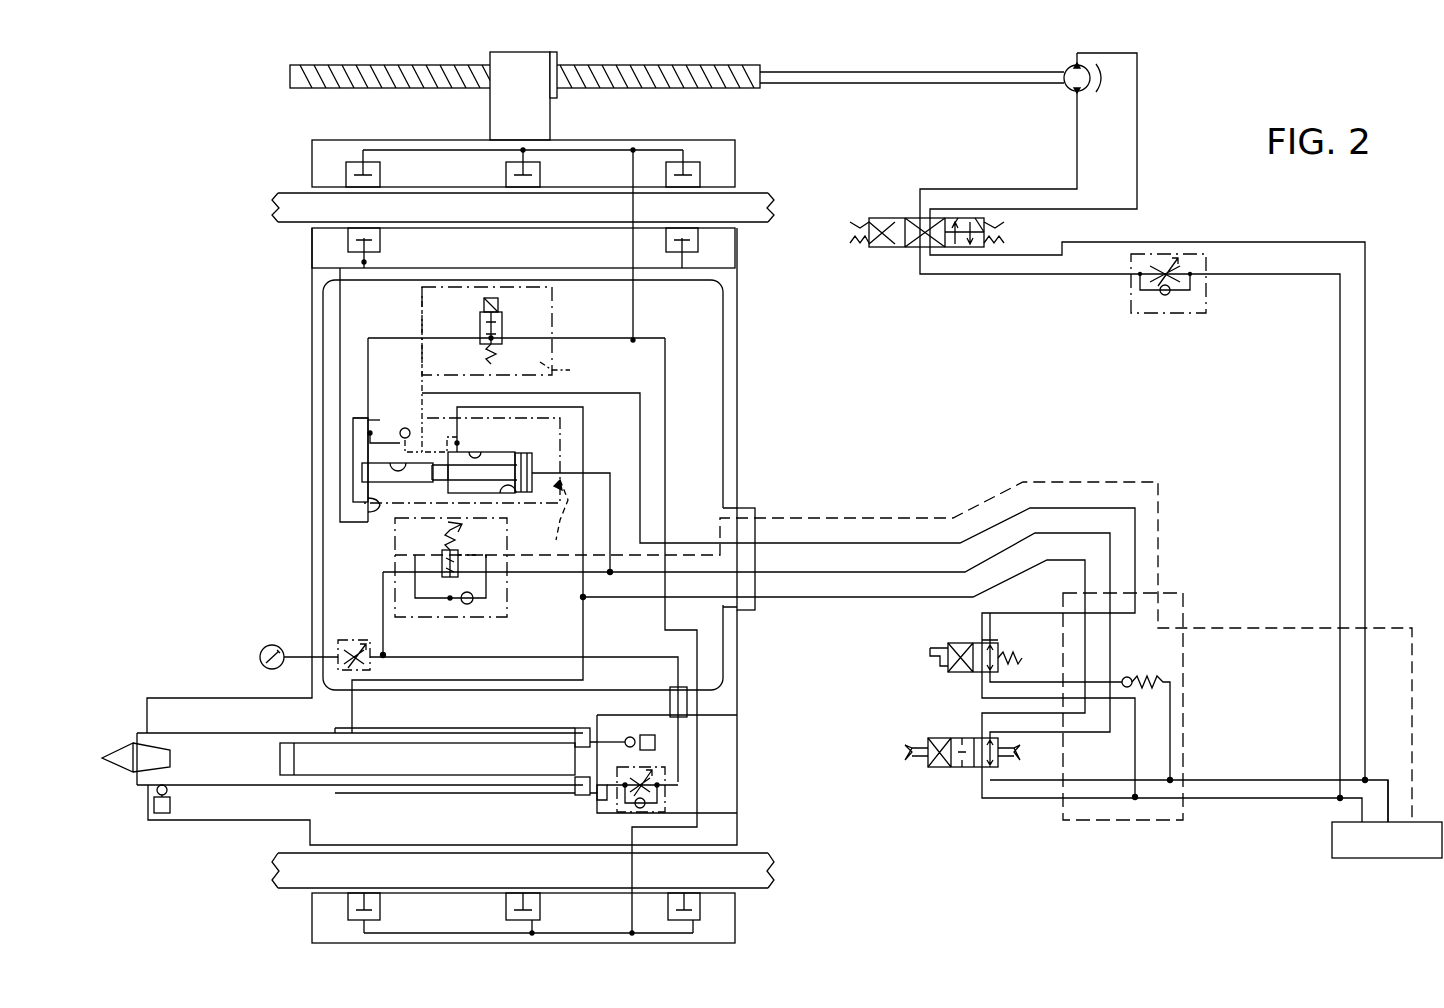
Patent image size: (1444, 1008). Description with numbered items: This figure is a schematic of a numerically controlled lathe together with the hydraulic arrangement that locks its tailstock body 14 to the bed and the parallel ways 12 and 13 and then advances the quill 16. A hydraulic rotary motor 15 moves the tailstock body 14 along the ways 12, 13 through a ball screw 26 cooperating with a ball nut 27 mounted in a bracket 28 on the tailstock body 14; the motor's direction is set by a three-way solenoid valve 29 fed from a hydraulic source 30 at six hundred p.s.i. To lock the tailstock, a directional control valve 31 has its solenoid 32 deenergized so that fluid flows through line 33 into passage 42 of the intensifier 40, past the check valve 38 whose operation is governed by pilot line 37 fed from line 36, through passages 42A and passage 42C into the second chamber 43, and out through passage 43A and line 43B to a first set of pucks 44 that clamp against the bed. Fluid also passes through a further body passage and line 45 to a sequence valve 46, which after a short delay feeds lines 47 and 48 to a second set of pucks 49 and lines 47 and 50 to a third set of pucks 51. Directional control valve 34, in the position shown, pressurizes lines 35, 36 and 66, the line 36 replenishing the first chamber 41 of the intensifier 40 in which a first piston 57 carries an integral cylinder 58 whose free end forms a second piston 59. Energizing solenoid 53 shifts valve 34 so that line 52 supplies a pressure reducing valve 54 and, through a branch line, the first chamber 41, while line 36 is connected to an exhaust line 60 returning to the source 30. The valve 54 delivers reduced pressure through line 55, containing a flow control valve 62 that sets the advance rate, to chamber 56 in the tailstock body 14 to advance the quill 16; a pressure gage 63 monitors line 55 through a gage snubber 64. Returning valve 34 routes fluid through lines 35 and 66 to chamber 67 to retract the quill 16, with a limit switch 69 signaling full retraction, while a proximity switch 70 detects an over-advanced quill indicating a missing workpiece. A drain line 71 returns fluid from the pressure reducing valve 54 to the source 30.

The way 12 is at (312, 184).
The way 13 is at (756, 880).
The tailstock body 14 is at (299, 287).
The hydraulic rotary motor 15 is at (1065, 90).
The quill 16 is at (200, 788).
The ball screw 26 is at (690, 90).
The ball nut 27 is at (557, 95).
The bracket 28 is at (490, 110).
The three-way solenoid valve 29 is at (893, 253).
The hydraulic source 30 is at (1350, 860).
The directional control valve 31 is at (982, 634).
The solenoid 32 is at (932, 645).
The line 33 is at (616, 390).
The directional control valve 34 is at (978, 732).
The line 35 is at (818, 600).
The line 36 is at (583, 420).
The pilot line 37 is at (436, 408).
The check valve 38 is at (400, 428).
The intensifier 40 is at (465, 486).
The first chamber 41 is at (478, 455).
The passage 42 is at (412, 430).
The passages 42A is at (372, 421).
The passage 42C is at (366, 458).
The second chamber 43 is at (384, 460).
The passage 43A is at (378, 506).
The line 43B is at (340, 320).
The pucks 44 is at (380, 240).
The line 45 is at (368, 356).
The sequence valve 46 is at (580, 368).
The line 47 is at (552, 318).
The line 48 is at (633, 252).
The pucks 49 is at (380, 176).
The line 50 is at (665, 447).
The pucks 51 is at (380, 912).
The line 52 is at (894, 597).
The solenoid 53 is at (912, 764).
The pressure reducing valve 54 is at (507, 615).
The line 55 is at (612, 670).
The chamber 56 is at (597, 800).
The first piston 57 is at (533, 472).
The cylinder 58 is at (508, 493).
The second piston 59 is at (432, 475).
The exhaust line 60 is at (1390, 800).
The flow control valve 62 is at (665, 806).
The pressure gage 63 is at (282, 645).
The gage snubber 64 is at (370, 632).
The line 66 is at (583, 620).
The chamber 67 is at (458, 730).
The limit switch 69 is at (656, 742).
The proximity switch 70 is at (150, 792).
The drain line 71 is at (778, 516).